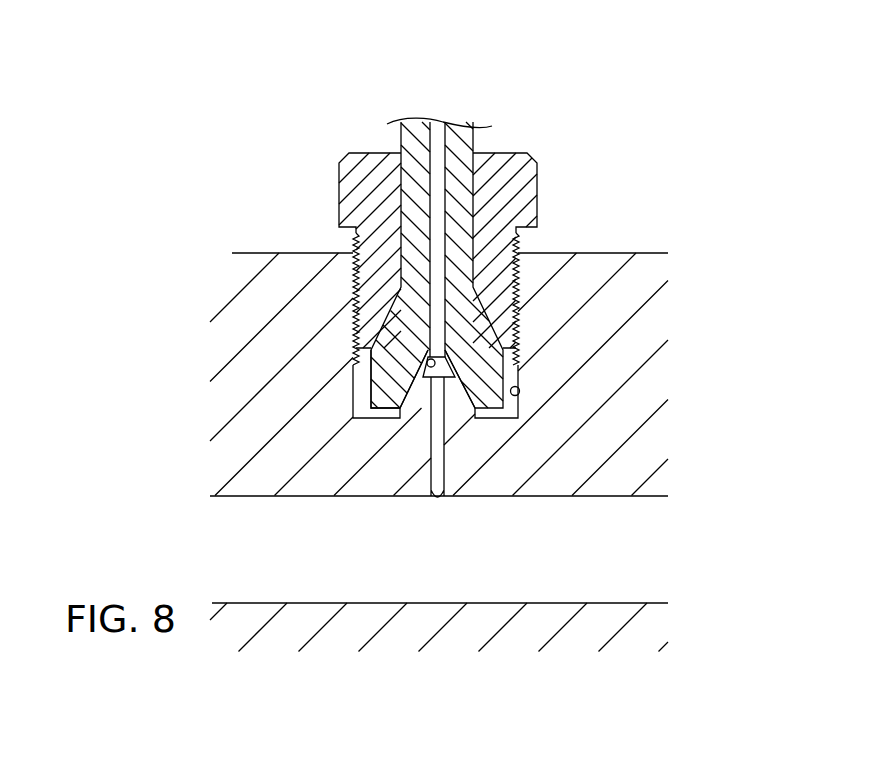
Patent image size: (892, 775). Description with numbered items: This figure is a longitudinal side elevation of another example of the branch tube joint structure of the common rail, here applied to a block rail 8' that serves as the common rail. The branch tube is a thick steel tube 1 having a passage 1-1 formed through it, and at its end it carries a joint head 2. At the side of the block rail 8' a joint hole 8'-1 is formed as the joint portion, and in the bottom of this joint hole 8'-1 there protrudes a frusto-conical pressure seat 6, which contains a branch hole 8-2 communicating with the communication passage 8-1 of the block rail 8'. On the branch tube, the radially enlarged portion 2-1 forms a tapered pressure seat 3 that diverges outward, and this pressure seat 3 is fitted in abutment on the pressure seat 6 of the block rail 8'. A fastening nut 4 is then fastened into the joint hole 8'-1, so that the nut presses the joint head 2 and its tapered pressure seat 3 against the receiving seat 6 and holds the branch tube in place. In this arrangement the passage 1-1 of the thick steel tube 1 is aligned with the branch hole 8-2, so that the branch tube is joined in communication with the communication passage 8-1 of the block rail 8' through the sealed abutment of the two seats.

The thick steel tube 1 is at (463, 128).
The passage 1-1 is at (438, 128).
The joint head 2 is at (360, 398).
The radially enlarged portion 2-1 is at (389, 388).
The pressure seat 3 is at (427, 368).
The fastening nut 4 is at (525, 183).
The receiving seat 6 is at (466, 392).
The block rail 8' is at (439, 353).
The joint hole 8'-1 is at (543, 383).
The communication passage 8-1 is at (637, 497).
The branch hole 8-2 is at (436, 498).